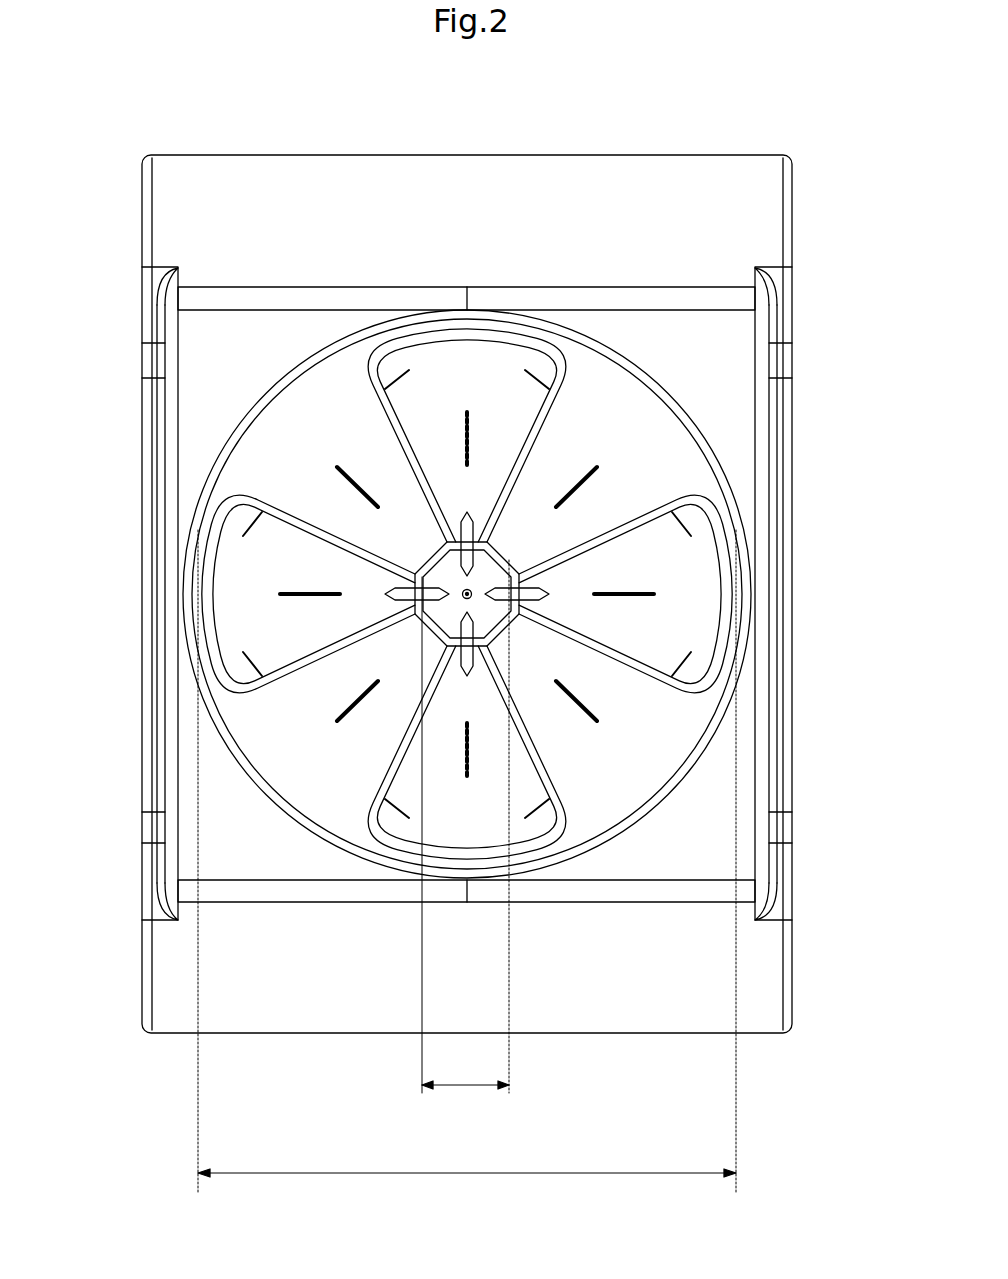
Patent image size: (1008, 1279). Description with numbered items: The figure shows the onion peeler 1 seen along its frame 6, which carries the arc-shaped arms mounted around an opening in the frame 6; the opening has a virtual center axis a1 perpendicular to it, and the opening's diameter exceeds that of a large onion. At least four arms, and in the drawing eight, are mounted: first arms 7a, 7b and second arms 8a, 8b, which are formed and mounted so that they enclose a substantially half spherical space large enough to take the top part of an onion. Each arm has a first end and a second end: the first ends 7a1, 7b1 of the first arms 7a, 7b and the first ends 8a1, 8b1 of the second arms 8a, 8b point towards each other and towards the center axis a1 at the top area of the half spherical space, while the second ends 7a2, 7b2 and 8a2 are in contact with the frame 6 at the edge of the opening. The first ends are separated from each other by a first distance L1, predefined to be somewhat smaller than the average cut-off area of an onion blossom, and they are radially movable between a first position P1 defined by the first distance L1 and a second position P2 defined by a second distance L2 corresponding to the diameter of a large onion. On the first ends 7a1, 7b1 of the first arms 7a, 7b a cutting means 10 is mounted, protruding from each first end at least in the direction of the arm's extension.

The container body 1 is at (760, 995).
The frame 6 is at (717, 366).
The first arm 7a is at (506, 432).
The first arm 7b is at (304, 624).
The second arm 8a is at (367, 449).
The second arm 8b is at (335, 756).
The first end of first arm 7a1 is at (447, 542).
The second end of first arm 7a2 is at (493, 358).
The first end of first arm 7b1 is at (413, 582).
The second end of first arm 7b2 is at (220, 618).
The first end of second arm 8a1 is at (425, 553).
The second end of second arm 8a2 is at (287, 403).
The first end of second arm 8b1 is at (517, 630).
The cutting means 10 is at (489, 594).
The virtual center axis a1 is at (462, 591).
The first distance L1 is at (465, 826).
The first position P1 is at (466, 1105).
The second distance L2 is at (467, 861).
The second position P2 is at (466, 1192).